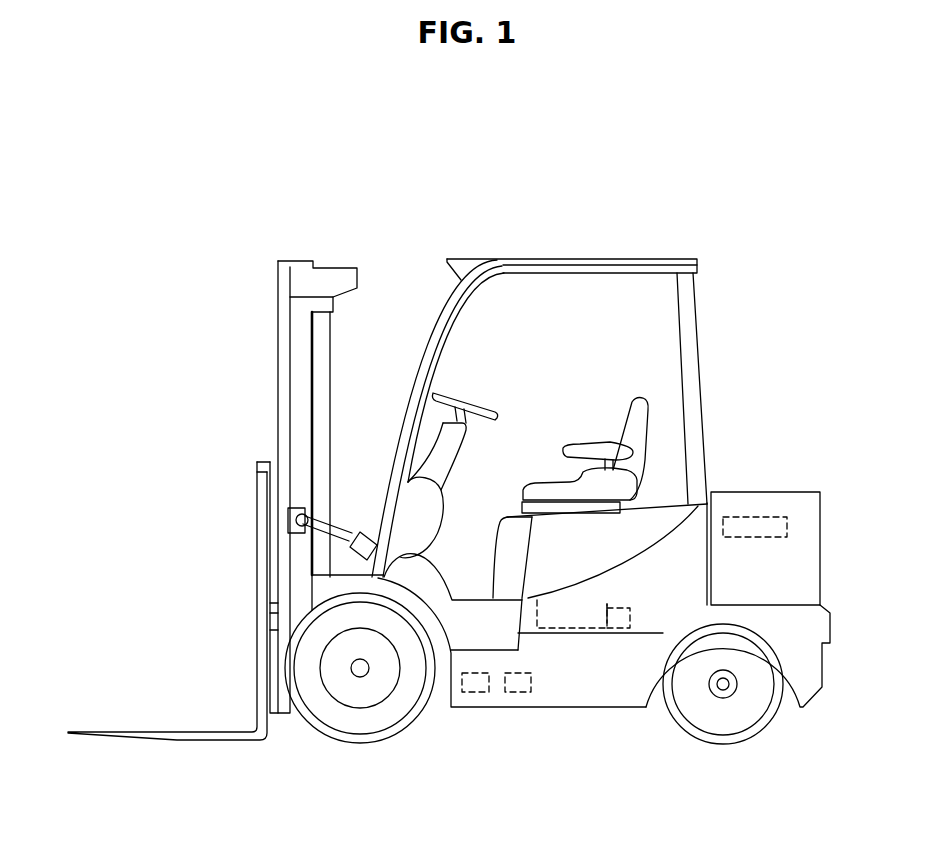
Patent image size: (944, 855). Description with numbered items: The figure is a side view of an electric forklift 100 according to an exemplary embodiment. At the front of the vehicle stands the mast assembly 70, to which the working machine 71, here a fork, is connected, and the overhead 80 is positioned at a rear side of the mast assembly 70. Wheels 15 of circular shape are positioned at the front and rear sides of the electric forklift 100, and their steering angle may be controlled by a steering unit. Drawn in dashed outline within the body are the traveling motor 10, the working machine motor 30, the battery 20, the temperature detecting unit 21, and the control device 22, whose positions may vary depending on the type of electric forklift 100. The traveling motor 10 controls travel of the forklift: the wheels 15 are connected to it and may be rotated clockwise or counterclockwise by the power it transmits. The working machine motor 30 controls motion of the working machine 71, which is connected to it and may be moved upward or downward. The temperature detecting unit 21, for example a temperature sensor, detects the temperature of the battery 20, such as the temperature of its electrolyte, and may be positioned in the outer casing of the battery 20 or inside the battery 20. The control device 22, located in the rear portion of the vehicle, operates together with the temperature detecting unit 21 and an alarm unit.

The electric forklift 100 is at (381, 186).
The overhead 80 is at (573, 262).
The mast assembly 70 is at (283, 308).
The working machine 71 is at (215, 739).
The wheels 15 is at (363, 722).
The traveling motor 10 is at (475, 693).
The working machine motor 30 is at (518, 693).
The battery 20 is at (563, 629).
The temperature detecting unit 21 is at (620, 629).
The control device 22 is at (768, 517).